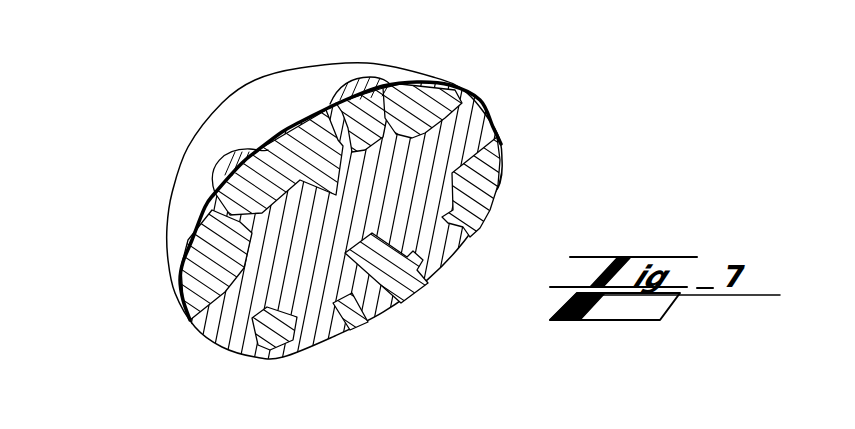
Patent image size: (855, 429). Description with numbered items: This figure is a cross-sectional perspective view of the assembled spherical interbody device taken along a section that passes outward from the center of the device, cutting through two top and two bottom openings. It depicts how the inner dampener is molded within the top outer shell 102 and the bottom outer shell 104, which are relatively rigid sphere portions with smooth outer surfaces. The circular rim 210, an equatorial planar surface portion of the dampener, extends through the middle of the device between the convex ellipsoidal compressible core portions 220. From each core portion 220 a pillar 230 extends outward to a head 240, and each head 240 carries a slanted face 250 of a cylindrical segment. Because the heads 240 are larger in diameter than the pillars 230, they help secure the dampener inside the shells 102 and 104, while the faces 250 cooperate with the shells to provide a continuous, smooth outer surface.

The top outer shell 102 is at (193, 157).
The bottom outer shell 104 is at (378, 297).
The rim 210 is at (482, 112).
The convex ellipsoidal compressible core portion 220 is at (247, 245).
The pillar 230 is at (445, 92).
The head 240 is at (265, 150).
The slanted face 250 is at (350, 85).